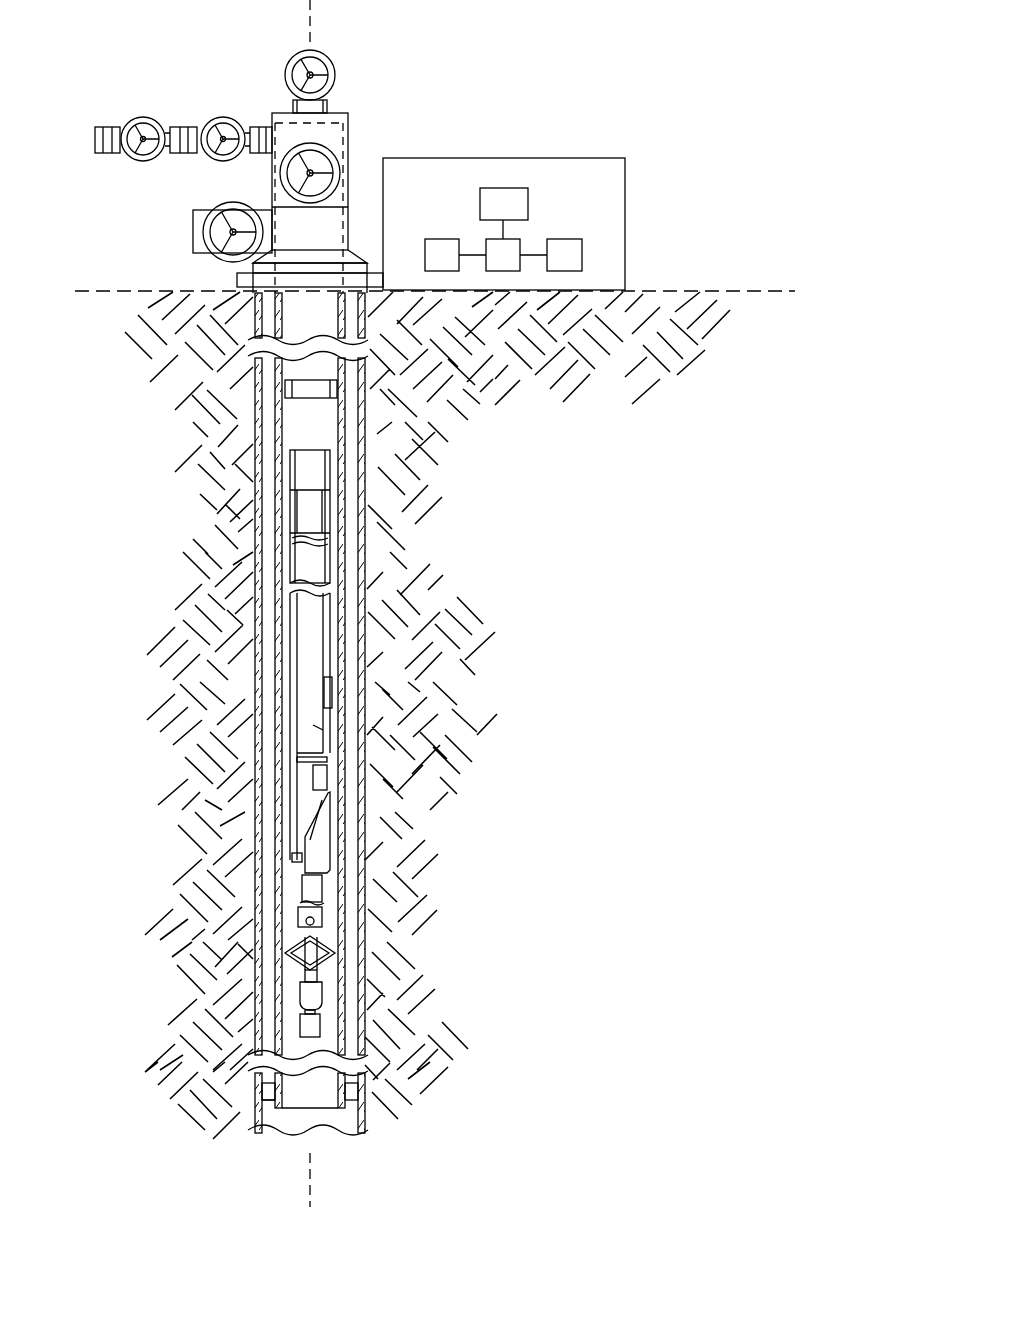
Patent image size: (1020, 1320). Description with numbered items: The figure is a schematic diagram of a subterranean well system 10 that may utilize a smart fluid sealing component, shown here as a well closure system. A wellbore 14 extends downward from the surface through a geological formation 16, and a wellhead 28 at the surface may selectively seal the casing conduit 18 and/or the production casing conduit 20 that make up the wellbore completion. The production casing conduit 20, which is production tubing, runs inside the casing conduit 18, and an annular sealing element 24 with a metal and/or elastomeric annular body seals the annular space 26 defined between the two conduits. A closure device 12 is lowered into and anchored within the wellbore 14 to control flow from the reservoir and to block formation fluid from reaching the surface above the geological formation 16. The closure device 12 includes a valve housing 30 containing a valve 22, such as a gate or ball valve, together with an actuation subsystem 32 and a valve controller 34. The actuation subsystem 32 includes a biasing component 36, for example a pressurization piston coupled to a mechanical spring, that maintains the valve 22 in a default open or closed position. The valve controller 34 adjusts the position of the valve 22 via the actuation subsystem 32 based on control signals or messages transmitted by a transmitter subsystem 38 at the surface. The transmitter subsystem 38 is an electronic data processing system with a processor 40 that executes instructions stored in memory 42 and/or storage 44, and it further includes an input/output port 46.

The subterranean well system 10 is at (600, 73).
The closure device 12 is at (413, 721).
The wellbore 14 is at (162, 289).
The geological formation 16 is at (590, 487).
The casing conduit 18 is at (365, 457).
The production casing conduit 20 is at (344, 507).
The valve 22 is at (327, 777).
The annular sealing element 24 is at (267, 1098).
The annular space 26 is at (273, 510).
The wellhead 28 is at (279, 113).
The valve housing 30 is at (410, 725).
The actuation subsystem 32 is at (313, 725).
The valve controller 34 is at (319, 913).
The biasing component 36 is at (335, 690).
The transmitter subsystem 38 is at (505, 158).
The processor 40 is at (490, 239).
The memory 42 is at (425, 253).
The storage 44 is at (564, 239).
The input/output port 46 is at (495, 188).